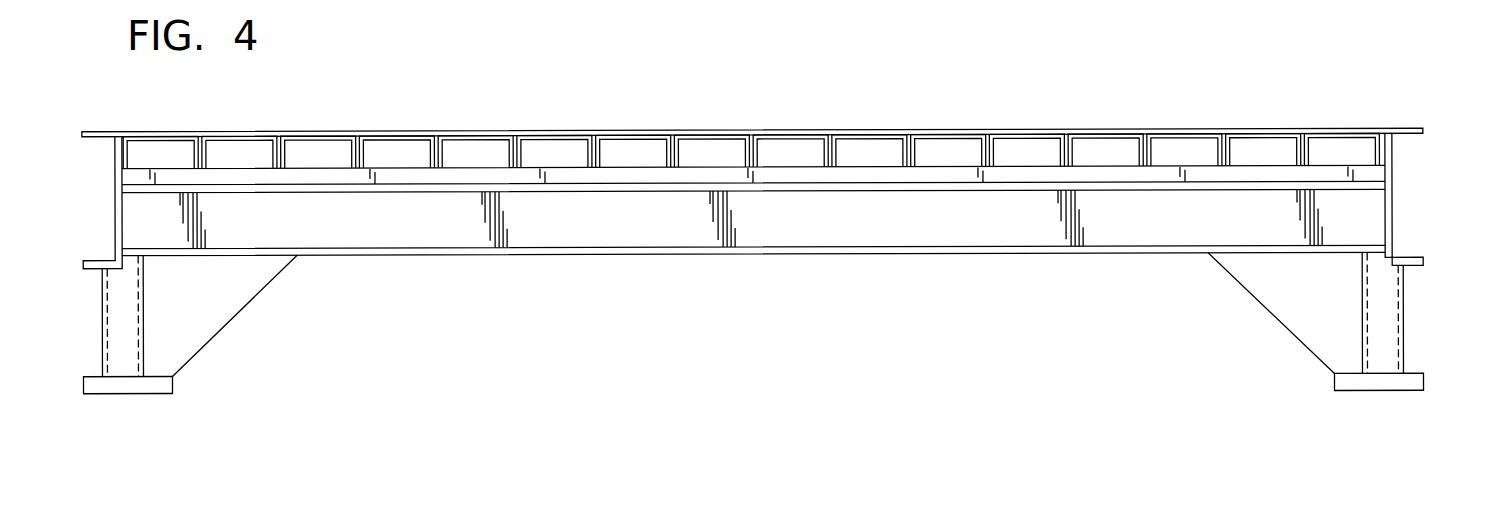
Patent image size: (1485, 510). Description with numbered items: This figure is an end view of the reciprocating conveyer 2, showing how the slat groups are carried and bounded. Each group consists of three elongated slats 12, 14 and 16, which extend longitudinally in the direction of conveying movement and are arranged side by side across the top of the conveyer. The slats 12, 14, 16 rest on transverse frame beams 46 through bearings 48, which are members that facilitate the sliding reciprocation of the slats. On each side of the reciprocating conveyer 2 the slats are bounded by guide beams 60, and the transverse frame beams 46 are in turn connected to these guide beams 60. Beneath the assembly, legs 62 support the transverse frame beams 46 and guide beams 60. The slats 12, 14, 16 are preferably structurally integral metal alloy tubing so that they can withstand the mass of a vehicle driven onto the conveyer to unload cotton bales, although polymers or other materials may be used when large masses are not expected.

The reciprocating conveyer 2 is at (856, 90).
The slat 12 is at (155, 132).
The slat 14 is at (240, 132).
The slat 16 is at (330, 132).
The transverse frame beam 46 is at (838, 238).
The bearing 48 is at (900, 173).
The guide beam 60 is at (103, 131).
The leg 62 is at (130, 313).